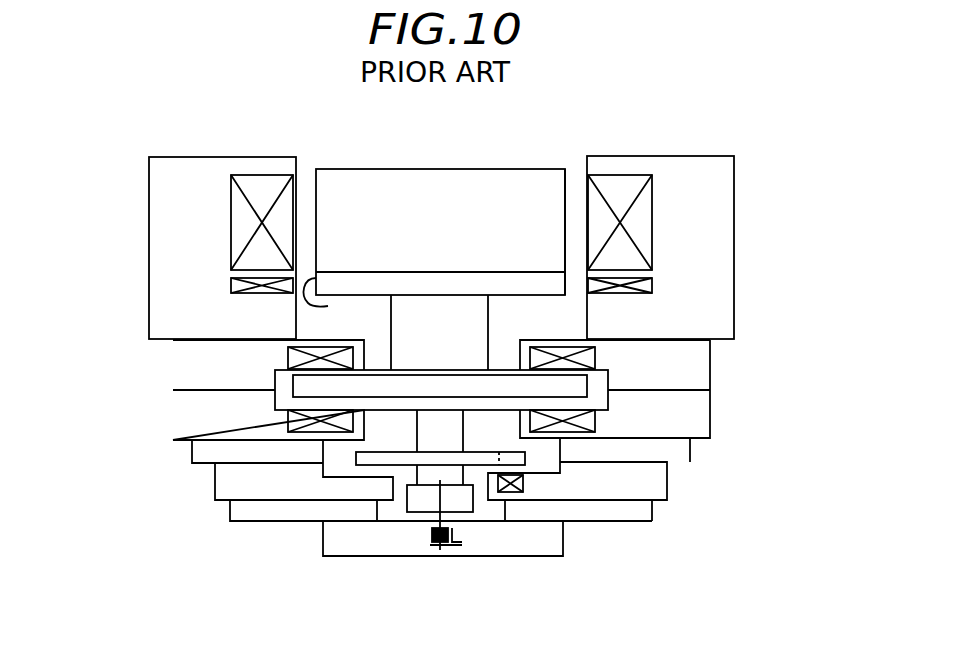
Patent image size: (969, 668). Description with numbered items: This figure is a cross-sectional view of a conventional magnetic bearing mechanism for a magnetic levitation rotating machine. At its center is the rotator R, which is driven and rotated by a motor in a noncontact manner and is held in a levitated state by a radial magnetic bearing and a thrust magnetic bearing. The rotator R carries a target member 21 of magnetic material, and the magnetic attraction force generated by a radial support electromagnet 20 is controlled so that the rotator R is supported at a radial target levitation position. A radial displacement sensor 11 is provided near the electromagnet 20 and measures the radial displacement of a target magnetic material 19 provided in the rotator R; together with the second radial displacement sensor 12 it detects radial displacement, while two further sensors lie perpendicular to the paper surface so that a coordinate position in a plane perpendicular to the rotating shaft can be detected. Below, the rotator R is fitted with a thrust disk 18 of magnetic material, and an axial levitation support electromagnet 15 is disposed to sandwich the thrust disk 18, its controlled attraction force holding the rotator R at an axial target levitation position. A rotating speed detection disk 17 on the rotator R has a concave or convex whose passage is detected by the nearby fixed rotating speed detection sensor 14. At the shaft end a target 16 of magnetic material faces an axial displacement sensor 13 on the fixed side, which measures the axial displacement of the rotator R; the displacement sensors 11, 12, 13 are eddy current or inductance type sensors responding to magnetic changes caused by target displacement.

The rotator R is at (365, 171).
The radial displacement sensor 11 is at (652, 282).
The radial displacement sensor 12 is at (231, 283).
The axial displacement sensor 13 is at (430, 546).
The rotating speed detection sensor 14 is at (508, 498).
The axial levitation support electromagnet 15 is at (595, 358).
The target for position sensor 16 is at (413, 503).
The rotating speed detection disk 17 is at (378, 458).
The thrust disk 18 is at (293, 387).
The target magnetic material 19 is at (327, 308).
The radial support electromagnet 20 is at (652, 225).
The target member 21 is at (566, 190).